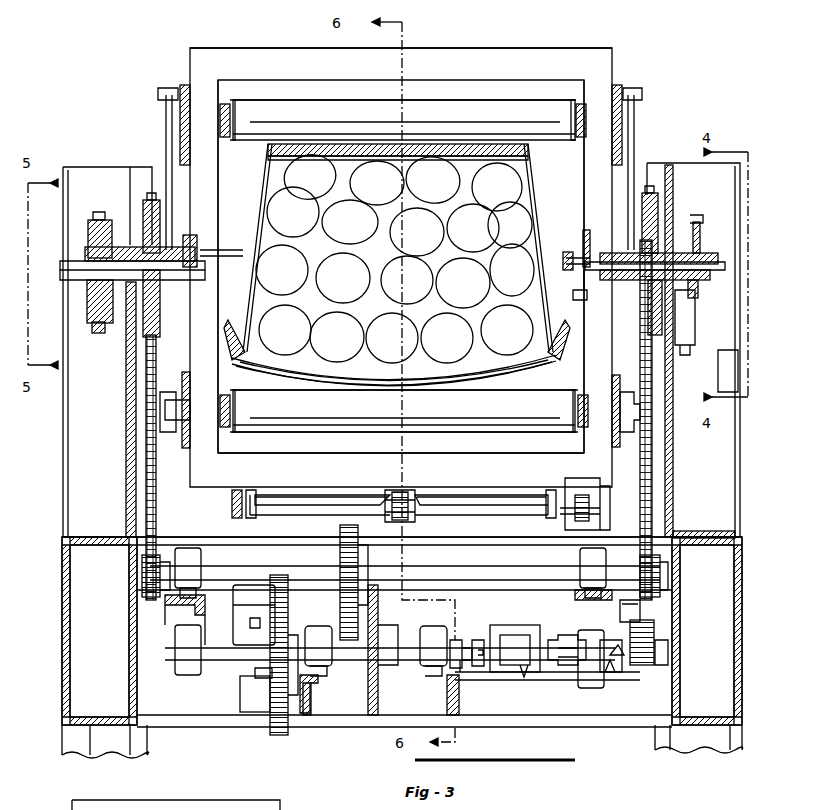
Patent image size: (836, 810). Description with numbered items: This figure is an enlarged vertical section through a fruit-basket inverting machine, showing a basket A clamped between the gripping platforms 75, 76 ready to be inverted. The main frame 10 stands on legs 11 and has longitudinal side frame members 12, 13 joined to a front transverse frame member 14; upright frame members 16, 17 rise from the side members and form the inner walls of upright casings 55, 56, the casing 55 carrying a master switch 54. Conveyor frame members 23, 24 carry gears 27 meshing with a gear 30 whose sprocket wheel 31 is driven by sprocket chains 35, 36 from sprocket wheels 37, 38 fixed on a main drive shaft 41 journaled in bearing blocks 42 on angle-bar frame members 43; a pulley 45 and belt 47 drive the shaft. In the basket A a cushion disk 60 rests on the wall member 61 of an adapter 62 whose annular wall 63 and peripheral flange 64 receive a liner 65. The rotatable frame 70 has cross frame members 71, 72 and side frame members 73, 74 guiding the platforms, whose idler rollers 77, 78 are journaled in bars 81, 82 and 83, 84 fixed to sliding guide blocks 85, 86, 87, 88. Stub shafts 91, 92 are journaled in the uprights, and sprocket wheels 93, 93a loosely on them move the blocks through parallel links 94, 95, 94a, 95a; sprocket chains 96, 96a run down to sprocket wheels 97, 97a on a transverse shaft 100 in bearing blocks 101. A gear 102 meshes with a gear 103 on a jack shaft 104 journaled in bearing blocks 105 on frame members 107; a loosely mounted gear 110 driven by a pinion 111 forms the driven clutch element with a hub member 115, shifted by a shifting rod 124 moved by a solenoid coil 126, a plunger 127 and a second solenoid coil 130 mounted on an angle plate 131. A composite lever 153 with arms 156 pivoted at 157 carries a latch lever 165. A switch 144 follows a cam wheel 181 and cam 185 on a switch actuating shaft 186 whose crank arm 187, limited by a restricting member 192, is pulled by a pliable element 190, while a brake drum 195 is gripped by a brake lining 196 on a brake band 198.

The main frame 10 is at (58, 735).
The legs 11 is at (104, 764).
The side frame member 12 is at (742, 629).
The side frame member 13 is at (62, 638).
The front transverse frame member 14 is at (541, 724).
The upright frame member 16 is at (674, 441).
The upright frame member 17 is at (126, 468).
The conveyor frame member 23 is at (590, 523).
The conveyor frame member 24 is at (226, 493).
The gears 27 is at (600, 485).
The gear 30 is at (578, 511).
The sprocket wheel 31 is at (610, 490).
The sprocket chain 35 is at (642, 607).
The sprocket chain 36 is at (654, 625).
The sprocket wheel 37 is at (620, 670).
The sprocket wheel 38 is at (666, 662).
The main drive shaft 41 is at (210, 678).
The bearing blocks 42 is at (184, 684).
The longitudinally extending frame members 43 is at (166, 615).
The pulley 45 is at (380, 610).
The belt 47 is at (386, 586).
The master switch 54 is at (718, 379).
The upright casing 55 is at (738, 474).
The upright casing 56 is at (64, 486).
The cushion disk 60 is at (499, 374).
The wall member 61 is at (358, 386).
The adapter 62 is at (433, 385).
The annular wall 63 is at (265, 334).
The peripheral flange 64 is at (226, 350).
The liner 65 is at (264, 206).
The rotatable frame 70 is at (433, 46).
The cross frame member 71 is at (472, 48).
The cross frame member 72 is at (454, 457).
The side frame member 73 is at (583, 179).
The side frame member 74 is at (221, 174).
The gripping platform 75 is at (312, 436).
The gripping platform 76 is at (285, 100).
The idler rollers 77 is at (512, 432).
The idler rollers 78 is at (472, 100).
The bar 81 is at (575, 407).
The bar 82 is at (235, 407).
The bar 83 is at (574, 115).
The bar 84 is at (228, 117).
The guide block 85 is at (612, 380).
The guide block 86 is at (189, 374).
The guide block 87 is at (612, 90).
The guide block 88 is at (190, 88).
The stub shaft 91 is at (622, 236).
The stub shaft 92 is at (182, 238).
The sprocket wheel 93 is at (642, 208).
The sprocket wheel 93a is at (158, 214).
The parallel link 94 is at (610, 412).
The parallel link 94a is at (230, 409).
The parallel link 95 is at (634, 124).
The parallel link 95a is at (166, 130).
The sprocket chain 96 is at (652, 467).
The sprocket chain 96a is at (146, 425).
The sprocket wheel 97 is at (662, 574).
The sprocket wheel 97a is at (142, 565).
The transverse shaft 100 is at (468, 576).
The bearing blocks 101 is at (200, 553).
The gear 102 is at (340, 554).
The gear 103 is at (345, 700).
The jack shaft 104 is at (462, 638).
The bearing blocks 105 is at (318, 625).
The longitudinally extending frame members 107 is at (308, 718).
The gear 110 is at (290, 597).
The pinion 111 is at (255, 671).
The hub member 115 is at (246, 587).
The shifting rod 124 is at (468, 666).
The solenoid coil 126 is at (510, 638).
The solenoid plunger 127 is at (562, 636).
The solenoid coil 130 is at (608, 682).
The angle plate 131 is at (497, 683).
The switch 144 is at (695, 330).
The composite lever 153 is at (466, 500).
The arms 156 is at (302, 496).
The pivot 157 is at (250, 491).
The latch lever 165 is at (408, 492).
The cam wheel 181 is at (693, 222).
The cam 185 is at (698, 283).
The switch actuating shaft 186 is at (720, 262).
The crank arm 187 is at (568, 252).
The pliable element 190 is at (232, 264).
The restricting member 192 is at (586, 300).
The brake drum 195 is at (88, 237).
The brake lining 196 is at (100, 311).
The brake band 198 is at (98, 333).
The basket A is at (531, 189).